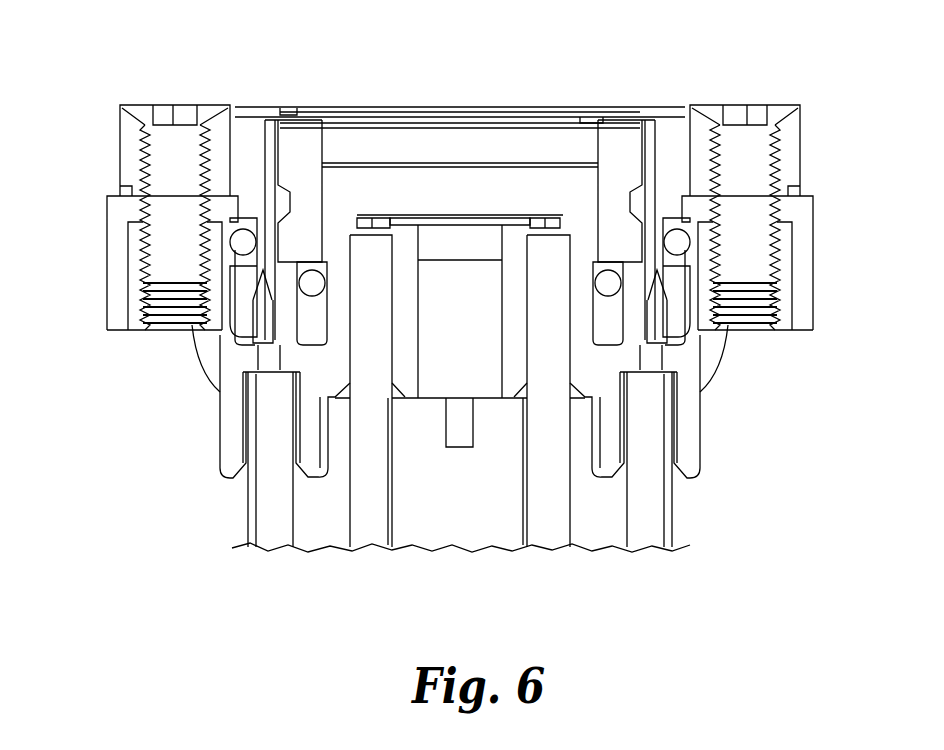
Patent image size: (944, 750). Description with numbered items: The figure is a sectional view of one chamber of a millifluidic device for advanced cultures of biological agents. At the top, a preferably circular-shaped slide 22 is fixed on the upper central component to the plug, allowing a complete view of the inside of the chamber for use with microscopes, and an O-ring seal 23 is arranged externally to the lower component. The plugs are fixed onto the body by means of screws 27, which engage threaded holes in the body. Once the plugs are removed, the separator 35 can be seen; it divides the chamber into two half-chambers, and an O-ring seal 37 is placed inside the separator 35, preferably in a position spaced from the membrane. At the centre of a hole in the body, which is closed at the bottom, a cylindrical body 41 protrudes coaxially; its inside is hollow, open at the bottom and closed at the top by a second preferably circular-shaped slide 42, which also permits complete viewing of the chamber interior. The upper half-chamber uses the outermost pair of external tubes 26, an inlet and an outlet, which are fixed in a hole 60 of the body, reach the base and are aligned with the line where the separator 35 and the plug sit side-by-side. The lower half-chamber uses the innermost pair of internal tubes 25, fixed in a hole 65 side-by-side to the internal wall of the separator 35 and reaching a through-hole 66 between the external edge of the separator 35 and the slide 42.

The slide 22 is at (476, 108).
The O-ring seal 23 is at (678, 240).
The internal tubes 25 is at (370, 525).
The external tubes 26 is at (272, 507).
The screws 27 is at (172, 163).
The separator 35 is at (621, 148).
The O-ring seal 37 is at (612, 287).
The cylindrical body 41 is at (600, 370).
The slide 42 is at (427, 215).
The hole 60 is at (247, 422).
The hole 65 is at (350, 360).
The through-hole 66 is at (556, 220).